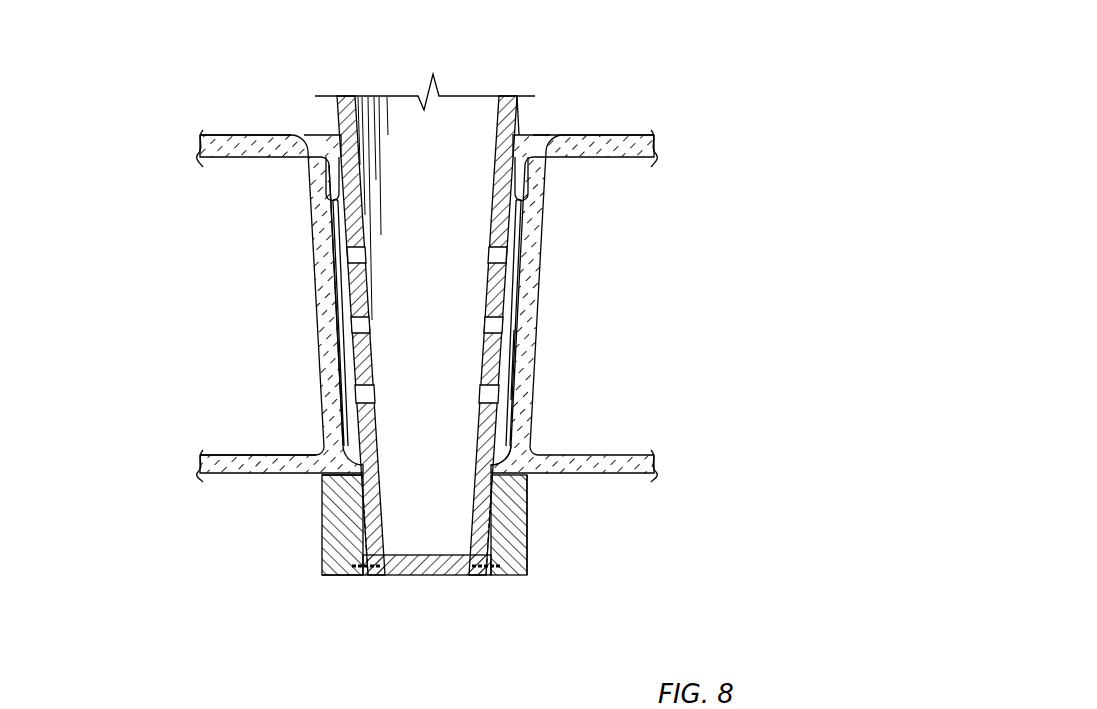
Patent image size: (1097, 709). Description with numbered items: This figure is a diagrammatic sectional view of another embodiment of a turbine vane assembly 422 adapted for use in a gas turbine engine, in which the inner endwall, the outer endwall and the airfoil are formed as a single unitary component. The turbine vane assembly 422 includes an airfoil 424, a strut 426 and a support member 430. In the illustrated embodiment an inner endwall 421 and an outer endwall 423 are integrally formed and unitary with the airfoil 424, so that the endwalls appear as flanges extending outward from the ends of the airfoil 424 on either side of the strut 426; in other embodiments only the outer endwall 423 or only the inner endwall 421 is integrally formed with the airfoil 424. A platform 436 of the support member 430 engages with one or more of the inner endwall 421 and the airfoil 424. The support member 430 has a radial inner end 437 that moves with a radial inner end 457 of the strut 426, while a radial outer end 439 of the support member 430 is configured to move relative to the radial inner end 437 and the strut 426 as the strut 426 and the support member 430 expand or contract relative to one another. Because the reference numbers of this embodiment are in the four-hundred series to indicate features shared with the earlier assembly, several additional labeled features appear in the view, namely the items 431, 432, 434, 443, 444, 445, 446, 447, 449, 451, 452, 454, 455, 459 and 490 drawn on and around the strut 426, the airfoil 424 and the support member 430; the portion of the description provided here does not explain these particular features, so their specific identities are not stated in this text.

The inner endwall 421 is at (215, 470).
The turbine vane assembly 422 is at (160, 128).
The outer endwall 423 is at (237, 133).
The airfoil 424 is at (306, 239).
The strut 426 is at (405, 105).
The support member 430 is at (338, 516).
The fastener 431 is at (500, 578).
The base block outer wall 432 is at (528, 548).
The liner lower end 434 is at (366, 512).
The platform 436 is at (507, 490).
The radial inner end of the support member 437 is at (320, 578).
The radial outer end of the support member 439 is at (321, 483).
The insulating film 443 is at (512, 350).
The insulating film 444 is at (548, 286).
The shell upper corner 445 is at (542, 153).
The shell side wall 446 is at (330, 196).
The shell lower bend 447 is at (522, 452).
The film upper end 449 is at (543, 147).
The insulating film 451 is at (350, 338).
The film hook 452 is at (333, 188).
The liner walls 454 is at (495, 327).
The liner passage 455 is at (463, 196).
The radial inner end of the strut 457 is at (463, 581).
The liner upper end 459 is at (519, 110).
The annular cavity 490 is at (615, 337).